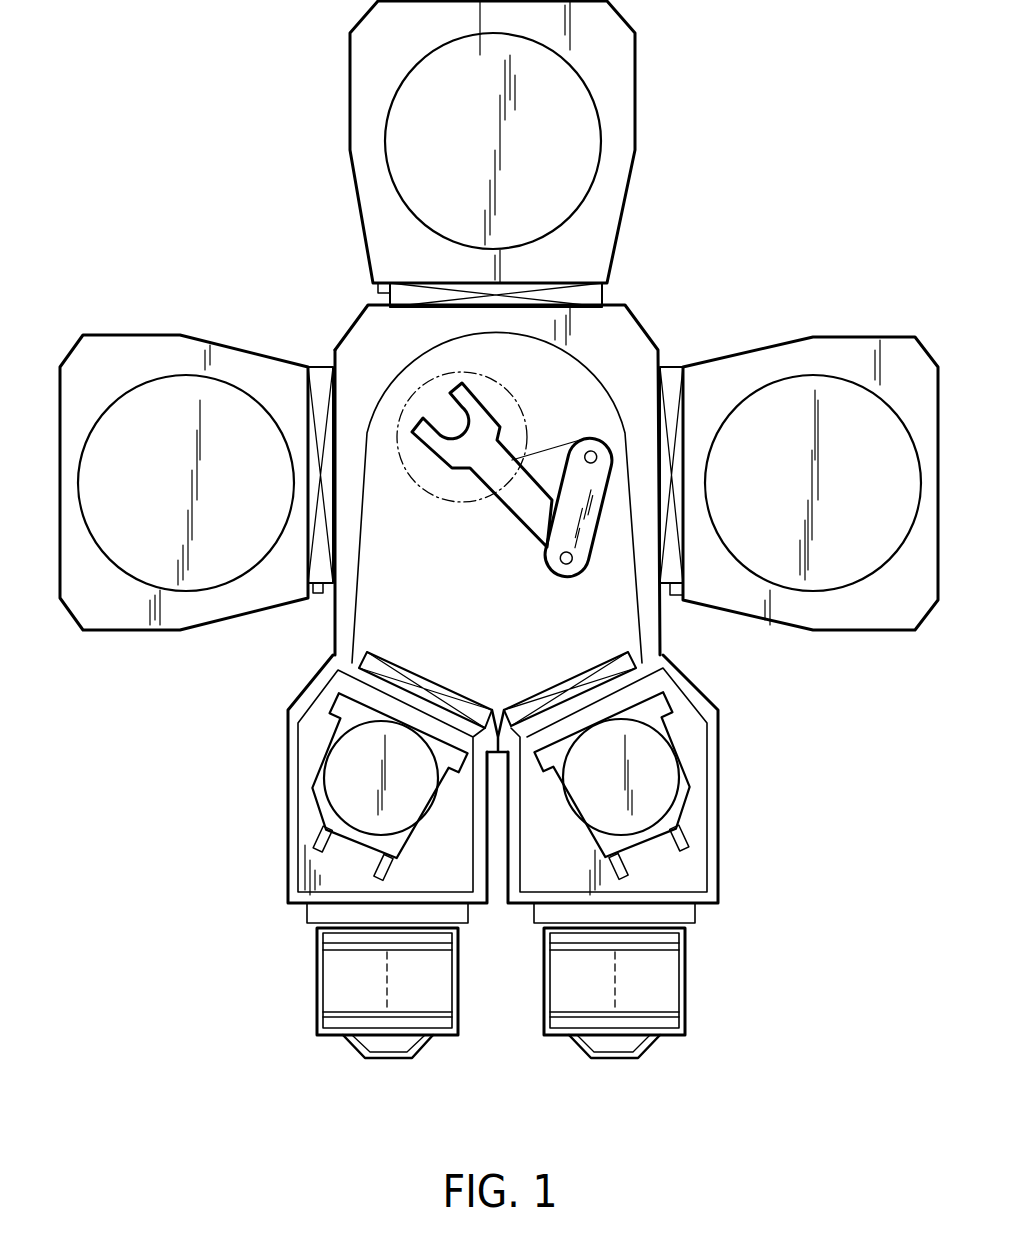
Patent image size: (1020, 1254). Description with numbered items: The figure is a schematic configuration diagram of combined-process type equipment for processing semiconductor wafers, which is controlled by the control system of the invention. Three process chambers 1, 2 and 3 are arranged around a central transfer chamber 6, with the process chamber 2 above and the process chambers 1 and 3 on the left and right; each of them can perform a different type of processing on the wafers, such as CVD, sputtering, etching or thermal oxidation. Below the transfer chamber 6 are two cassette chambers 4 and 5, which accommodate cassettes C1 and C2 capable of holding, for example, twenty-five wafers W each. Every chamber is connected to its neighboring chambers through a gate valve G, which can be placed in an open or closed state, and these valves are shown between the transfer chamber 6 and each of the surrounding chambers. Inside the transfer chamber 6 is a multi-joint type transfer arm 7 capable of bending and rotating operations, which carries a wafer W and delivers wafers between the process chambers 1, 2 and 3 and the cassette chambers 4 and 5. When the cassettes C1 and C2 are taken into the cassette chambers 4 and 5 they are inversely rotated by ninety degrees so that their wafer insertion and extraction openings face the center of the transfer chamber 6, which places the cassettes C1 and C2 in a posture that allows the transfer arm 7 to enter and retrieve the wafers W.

The process chamber 1 is at (123, 335).
The process chamber 2 is at (585, 125).
The process chamber 3 is at (823, 337).
The cassette chamber 4 is at (288, 737).
The cassette chamber 5 is at (722, 890).
The transfer chamber 6 is at (457, 617).
The transfer arm 7 is at (602, 348).
The gate valve G is at (322, 367).
The wafer W is at (425, 493).
The cassette C1 is at (316, 786).
The cassette C2 is at (678, 793).